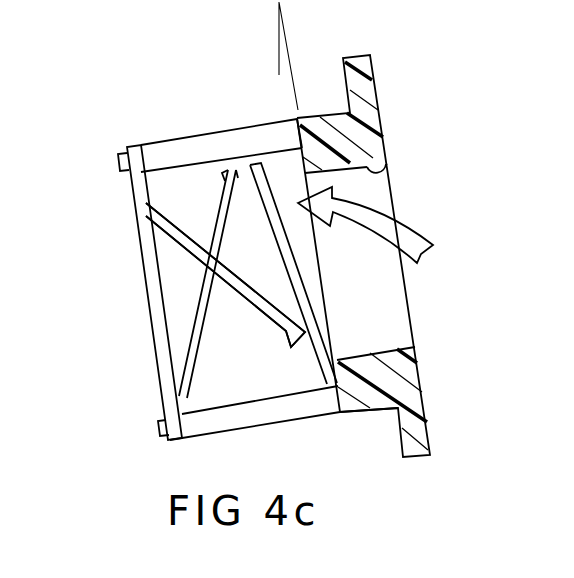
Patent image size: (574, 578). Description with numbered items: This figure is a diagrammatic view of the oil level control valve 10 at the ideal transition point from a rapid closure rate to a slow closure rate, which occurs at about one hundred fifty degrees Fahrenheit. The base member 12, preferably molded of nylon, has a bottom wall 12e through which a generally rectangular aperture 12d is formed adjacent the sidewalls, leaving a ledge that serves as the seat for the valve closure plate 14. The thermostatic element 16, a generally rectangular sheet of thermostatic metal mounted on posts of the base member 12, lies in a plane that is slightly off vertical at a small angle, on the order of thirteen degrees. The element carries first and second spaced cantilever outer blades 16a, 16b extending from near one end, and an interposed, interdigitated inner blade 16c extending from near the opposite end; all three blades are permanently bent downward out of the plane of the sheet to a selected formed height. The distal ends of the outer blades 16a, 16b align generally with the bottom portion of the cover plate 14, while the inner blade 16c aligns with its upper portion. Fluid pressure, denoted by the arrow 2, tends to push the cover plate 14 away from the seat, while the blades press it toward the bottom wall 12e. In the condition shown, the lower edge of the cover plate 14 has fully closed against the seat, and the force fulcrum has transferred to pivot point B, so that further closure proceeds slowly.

The oil level control valve 10 is at (176, 70).
The base member 12 is at (388, 88).
The aperture 12d is at (390, 172).
The bottom wall 12e is at (302, 152).
The valve closure plate 14 is at (313, 313).
The thermostatic element 16 is at (137, 283).
The first outer blade 16a is at (270, 310).
The second outer blade 16b is at (225, 335).
The inner blade 16c is at (233, 198).
The arrow denoting fluid pressure 2 is at (403, 237).
The pivot point B is at (337, 362).